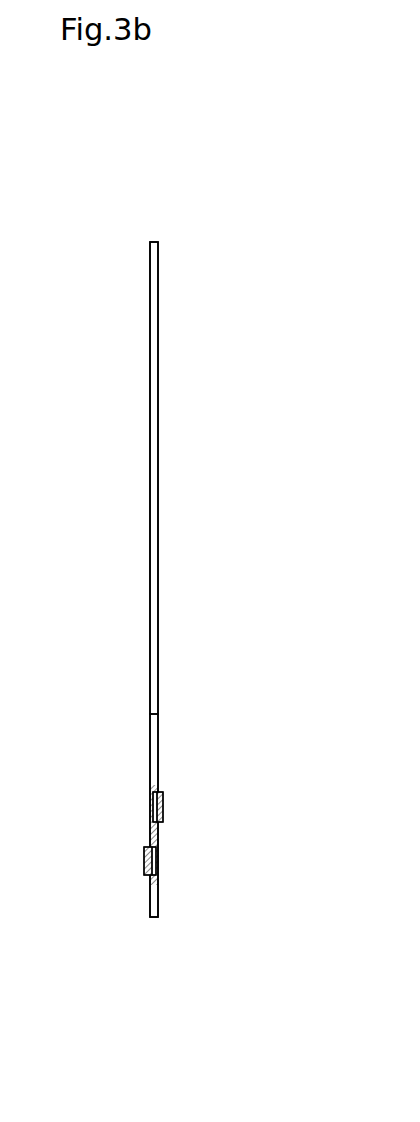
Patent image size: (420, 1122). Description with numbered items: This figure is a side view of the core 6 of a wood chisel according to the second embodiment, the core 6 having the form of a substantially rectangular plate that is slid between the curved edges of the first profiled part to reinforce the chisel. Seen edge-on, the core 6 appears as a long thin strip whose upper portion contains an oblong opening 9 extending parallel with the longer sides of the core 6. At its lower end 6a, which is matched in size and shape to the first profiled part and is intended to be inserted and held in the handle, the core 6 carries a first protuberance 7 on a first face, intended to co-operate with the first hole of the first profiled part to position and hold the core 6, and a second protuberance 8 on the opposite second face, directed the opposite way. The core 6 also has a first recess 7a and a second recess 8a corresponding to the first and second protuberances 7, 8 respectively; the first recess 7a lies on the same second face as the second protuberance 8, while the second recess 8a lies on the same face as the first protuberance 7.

The core 6 is at (292, 331).
The oblong opening 9 is at (156, 488).
The end of the core 6a is at (155, 838).
The second protuberance 8 is at (164, 806).
The second recess 8a is at (158, 804).
The first protuberance 7 is at (147, 860).
The first recess 7a is at (155, 863).